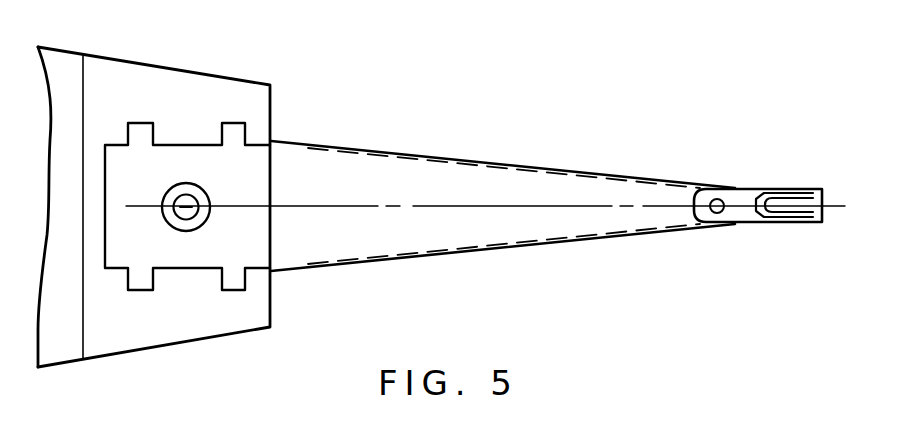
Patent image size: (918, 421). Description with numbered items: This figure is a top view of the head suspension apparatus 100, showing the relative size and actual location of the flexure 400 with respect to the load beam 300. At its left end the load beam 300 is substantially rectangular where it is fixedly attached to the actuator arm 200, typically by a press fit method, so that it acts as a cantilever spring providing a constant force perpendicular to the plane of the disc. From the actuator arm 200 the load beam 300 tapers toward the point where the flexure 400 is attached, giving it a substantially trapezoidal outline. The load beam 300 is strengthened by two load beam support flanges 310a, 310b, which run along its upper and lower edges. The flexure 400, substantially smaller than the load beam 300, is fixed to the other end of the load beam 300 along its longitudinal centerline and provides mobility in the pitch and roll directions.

The tapered body / elongated member 100 is at (400, 154).
The actuator arm 200 is at (161, 66).
The load beam 300 is at (504, 222).
The load beam support flange 310a is at (553, 170).
The load beam support flange 310b is at (560, 246).
The flexure 400 is at (795, 222).